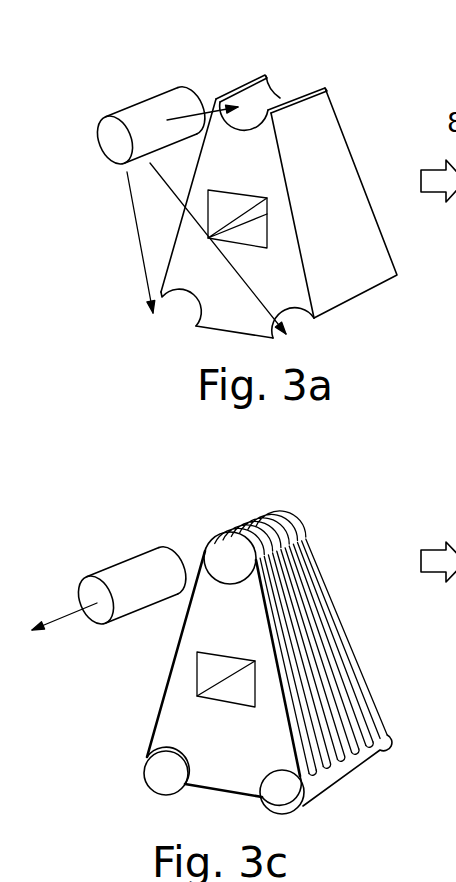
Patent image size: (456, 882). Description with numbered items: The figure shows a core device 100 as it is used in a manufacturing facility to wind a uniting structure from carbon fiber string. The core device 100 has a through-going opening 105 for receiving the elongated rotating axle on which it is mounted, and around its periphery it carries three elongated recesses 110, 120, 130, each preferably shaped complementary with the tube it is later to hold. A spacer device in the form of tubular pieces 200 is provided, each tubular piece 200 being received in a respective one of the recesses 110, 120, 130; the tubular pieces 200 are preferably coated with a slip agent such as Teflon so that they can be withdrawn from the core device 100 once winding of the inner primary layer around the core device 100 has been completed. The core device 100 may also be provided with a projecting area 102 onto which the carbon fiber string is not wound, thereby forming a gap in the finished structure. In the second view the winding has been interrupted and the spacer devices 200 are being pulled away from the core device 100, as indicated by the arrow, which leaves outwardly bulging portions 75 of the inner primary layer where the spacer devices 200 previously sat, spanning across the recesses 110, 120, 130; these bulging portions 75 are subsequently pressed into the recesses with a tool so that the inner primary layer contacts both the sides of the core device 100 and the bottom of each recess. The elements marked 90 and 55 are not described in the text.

In FIG. 3A, the core device 100 is at (337, 70).
In FIG. 3C, the core device 100 is at (183, 695).
In FIG. 3A, the elongated recess 110 is at (255, 97).
In FIG. 3A, the elongated recess 120 is at (182, 300).
In FIG. 3C, the elongated recess 120 is at (167, 753).
In FIG. 3A, the elongated recess 130 is at (300, 318).
In FIG. 3A, the tubular piece 200 is at (147, 112).
In FIG. 3C, the tubular piece 200 is at (137, 580).
In FIG. 3C, the pivot pin 90 is at (237, 563).
In FIG. 3C, the outwardly bulging portion 75 is at (293, 518).
In FIG. 3C, the through-going opening 105 is at (217, 667).
In FIG. 3C, the projecting area 102 is at (338, 728).
In FIG. 3C, the leaves 55 is at (326, 680).